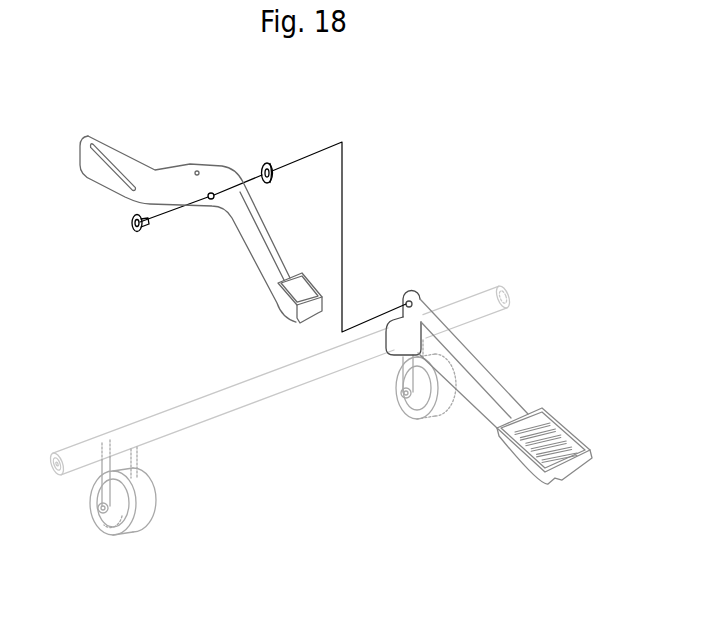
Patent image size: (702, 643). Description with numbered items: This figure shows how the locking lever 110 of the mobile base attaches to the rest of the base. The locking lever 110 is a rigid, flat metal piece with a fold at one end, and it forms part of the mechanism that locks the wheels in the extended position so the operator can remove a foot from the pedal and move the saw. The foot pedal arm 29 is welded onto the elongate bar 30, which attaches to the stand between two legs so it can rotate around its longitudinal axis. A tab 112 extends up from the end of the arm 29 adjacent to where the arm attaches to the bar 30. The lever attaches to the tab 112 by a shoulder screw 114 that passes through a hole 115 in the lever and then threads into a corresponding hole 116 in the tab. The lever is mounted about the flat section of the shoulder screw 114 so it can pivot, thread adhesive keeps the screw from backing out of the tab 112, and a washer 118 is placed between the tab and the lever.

The locking lever 110 is at (158, 188).
The hole 115 is at (212, 190).
The washer 118 is at (274, 165).
The shoulder screw 114 is at (133, 230).
The hole 116 is at (406, 302).
The tab 112 is at (413, 296).
The elongate bar 30 is at (205, 412).
The arm 29 is at (471, 388).